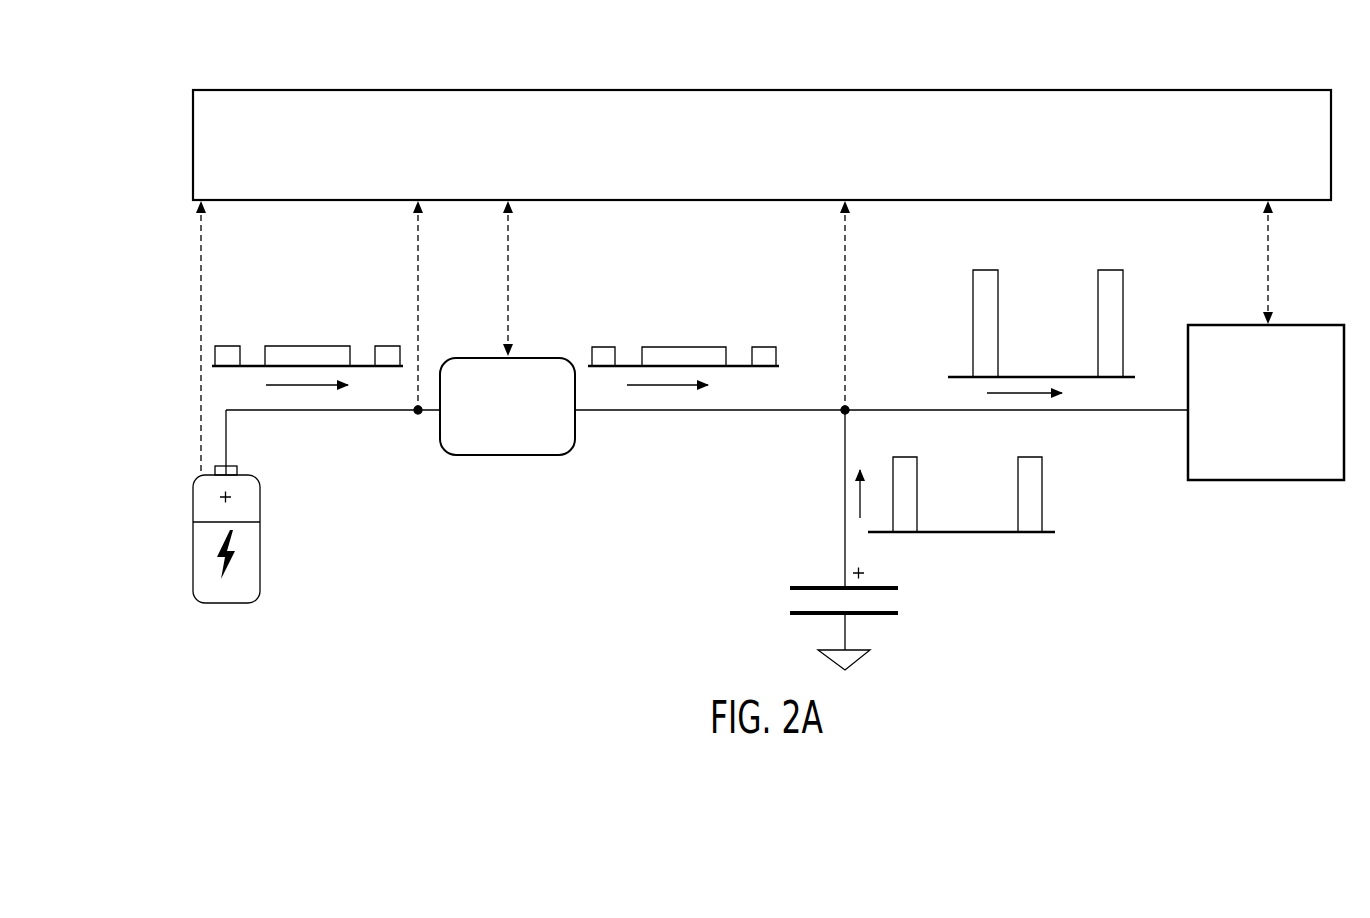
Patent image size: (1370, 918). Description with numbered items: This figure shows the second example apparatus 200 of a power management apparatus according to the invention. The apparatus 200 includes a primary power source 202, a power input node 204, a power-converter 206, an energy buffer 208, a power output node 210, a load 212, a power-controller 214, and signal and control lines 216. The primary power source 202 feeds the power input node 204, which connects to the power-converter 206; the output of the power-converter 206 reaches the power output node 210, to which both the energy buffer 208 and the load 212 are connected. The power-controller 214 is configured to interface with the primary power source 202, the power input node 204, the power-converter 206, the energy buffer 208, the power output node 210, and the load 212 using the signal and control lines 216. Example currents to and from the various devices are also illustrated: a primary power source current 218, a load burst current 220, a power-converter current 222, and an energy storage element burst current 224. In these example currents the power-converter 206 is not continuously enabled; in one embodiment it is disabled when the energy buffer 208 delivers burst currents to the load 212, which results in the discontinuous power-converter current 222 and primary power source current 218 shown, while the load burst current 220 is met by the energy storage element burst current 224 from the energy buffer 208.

The second example apparatus 200 is at (228, 68).
The primary power source 202 is at (261, 548).
The power input node 204 is at (413, 417).
The power-converter 206 is at (508, 457).
The energy buffer 208 is at (790, 603).
The power output node 210 is at (848, 404).
The load 212 is at (1311, 324).
The power-controller 214 is at (632, 89).
The signal and control lines 216 is at (203, 258).
The primary power source current 218 is at (338, 275).
The load burst current 220 is at (1030, 352).
The power-converter current 222 is at (688, 345).
The energy storage element burst current 224 is at (1070, 497).